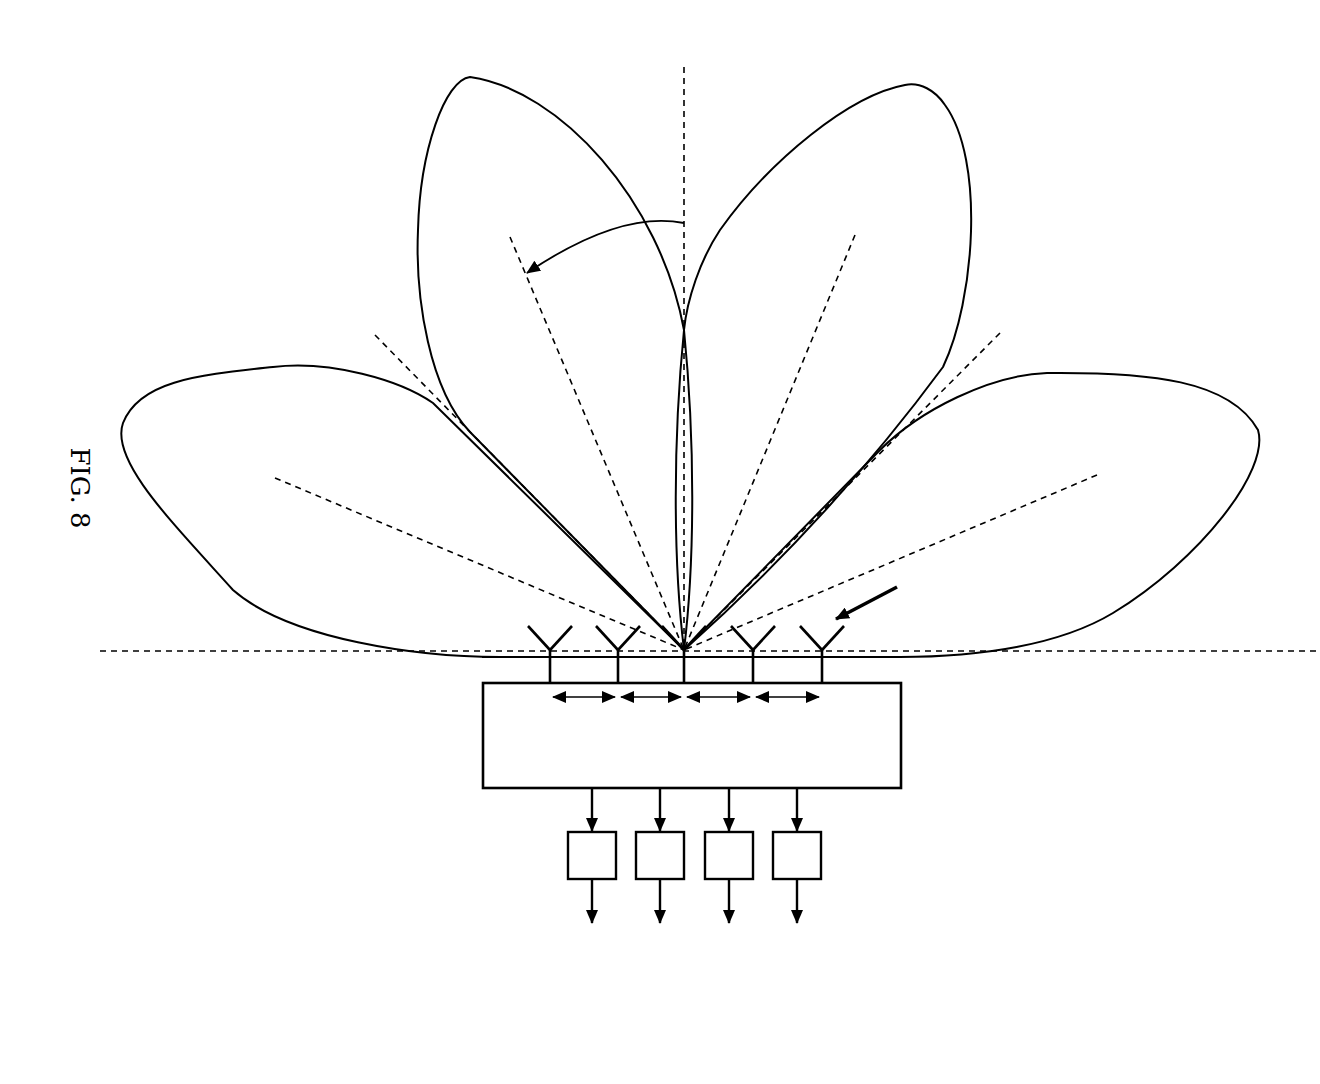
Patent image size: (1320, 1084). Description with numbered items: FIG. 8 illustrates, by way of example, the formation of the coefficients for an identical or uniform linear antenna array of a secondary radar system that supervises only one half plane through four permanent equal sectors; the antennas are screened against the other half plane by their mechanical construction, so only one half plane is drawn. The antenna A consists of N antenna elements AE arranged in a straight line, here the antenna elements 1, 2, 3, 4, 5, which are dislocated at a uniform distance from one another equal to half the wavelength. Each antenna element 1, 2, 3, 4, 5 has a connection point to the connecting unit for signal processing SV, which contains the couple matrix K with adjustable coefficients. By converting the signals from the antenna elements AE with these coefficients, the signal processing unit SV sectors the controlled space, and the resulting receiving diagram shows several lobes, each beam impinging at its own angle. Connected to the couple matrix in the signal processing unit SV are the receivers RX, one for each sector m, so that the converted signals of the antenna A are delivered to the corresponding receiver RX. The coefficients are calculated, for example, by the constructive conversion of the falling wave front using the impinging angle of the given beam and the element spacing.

The antenna A is at (882, 593).
The antenna element AE is at (672, 656).
The antenna element 1 is at (565, 673).
The antenna element 2 is at (633, 673).
The antenna element 3 is at (699, 673).
The antenna element 4 is at (768, 673).
The antenna element 5 is at (837, 673).
The connecting unit for signal processing SV is at (503, 727).
The receiver RX is at (695, 855).